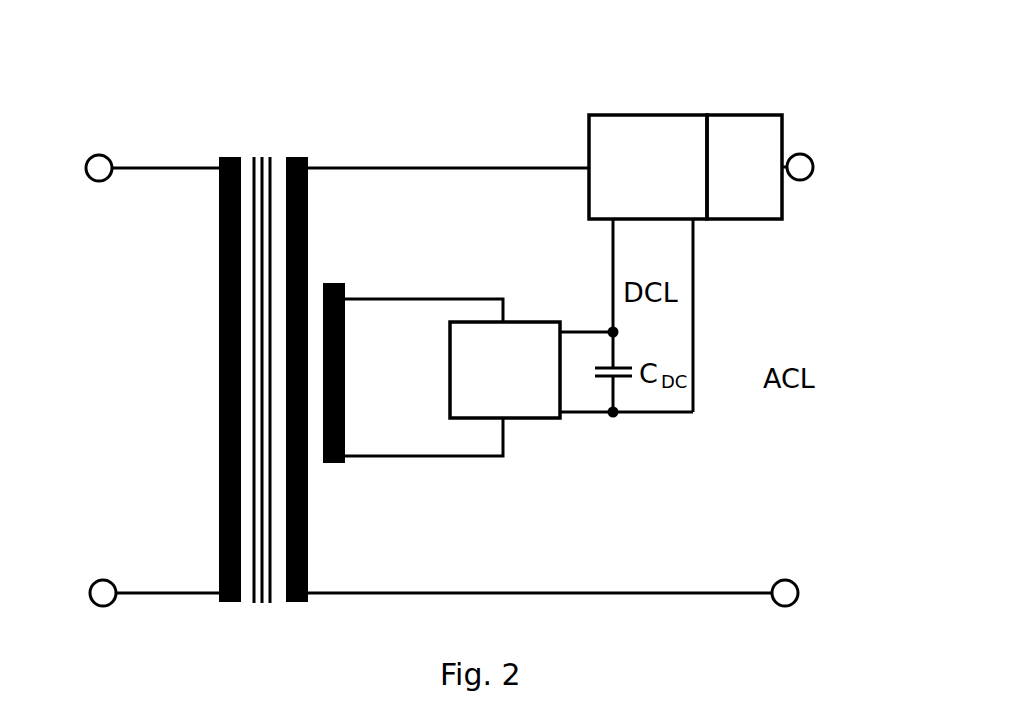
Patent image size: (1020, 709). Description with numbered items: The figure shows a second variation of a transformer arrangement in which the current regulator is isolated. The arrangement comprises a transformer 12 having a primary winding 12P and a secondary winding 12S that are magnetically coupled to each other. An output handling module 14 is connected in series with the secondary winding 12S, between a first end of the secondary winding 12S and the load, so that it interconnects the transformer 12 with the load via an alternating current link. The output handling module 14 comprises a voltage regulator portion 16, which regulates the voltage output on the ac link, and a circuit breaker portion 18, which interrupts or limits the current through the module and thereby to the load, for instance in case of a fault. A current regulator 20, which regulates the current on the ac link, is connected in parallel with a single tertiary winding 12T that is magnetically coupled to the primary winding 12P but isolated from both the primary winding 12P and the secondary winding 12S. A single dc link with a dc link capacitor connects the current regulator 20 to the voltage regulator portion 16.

The transformer 12 is at (250, 141).
The primary winding 12P is at (219, 287).
The secondary winding 12S is at (308, 240).
The tertiary winding 12T is at (345, 463).
The output handling module 14 is at (720, 120).
The voltage regulator portion 16 is at (634, 162).
The circuit breaker portion 18 is at (731, 162).
The current regulator 20 is at (490, 364).